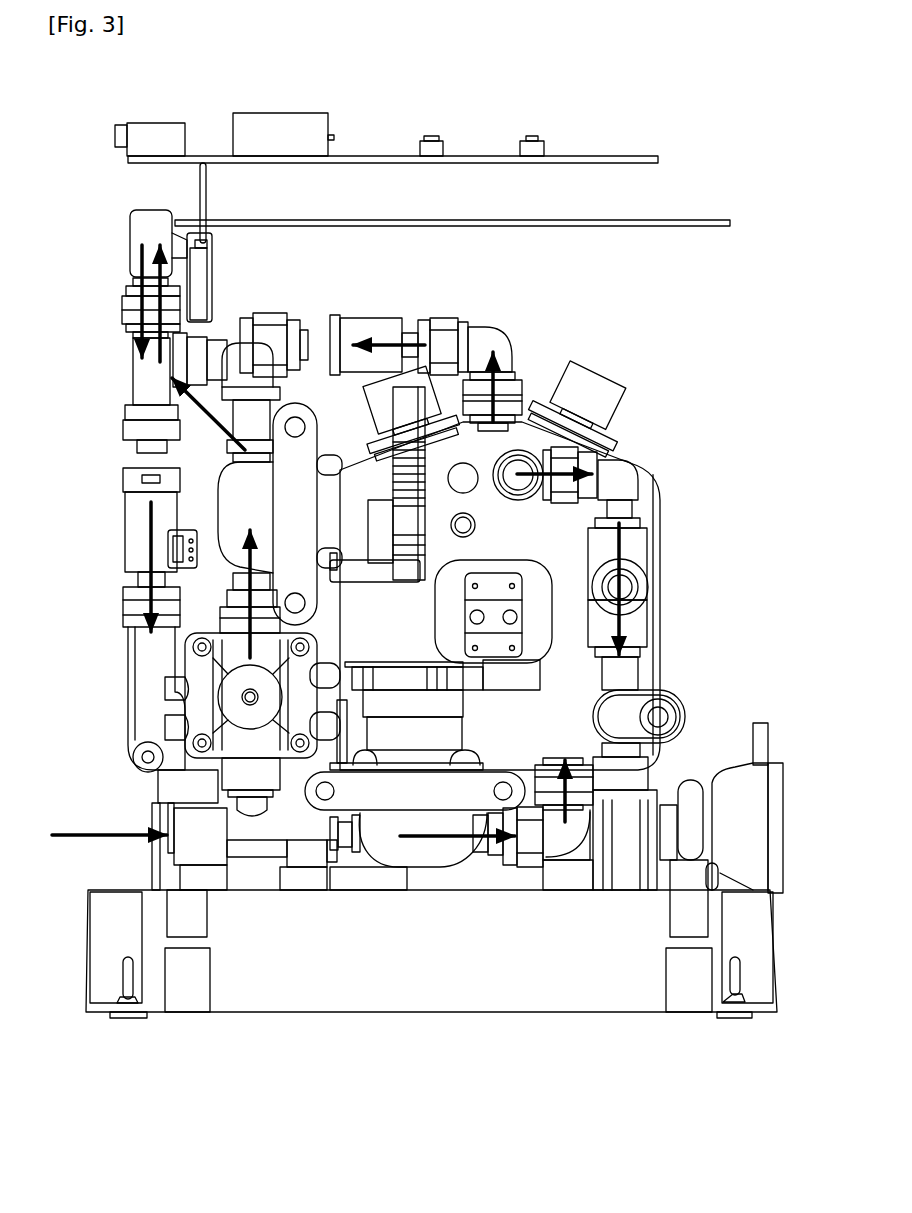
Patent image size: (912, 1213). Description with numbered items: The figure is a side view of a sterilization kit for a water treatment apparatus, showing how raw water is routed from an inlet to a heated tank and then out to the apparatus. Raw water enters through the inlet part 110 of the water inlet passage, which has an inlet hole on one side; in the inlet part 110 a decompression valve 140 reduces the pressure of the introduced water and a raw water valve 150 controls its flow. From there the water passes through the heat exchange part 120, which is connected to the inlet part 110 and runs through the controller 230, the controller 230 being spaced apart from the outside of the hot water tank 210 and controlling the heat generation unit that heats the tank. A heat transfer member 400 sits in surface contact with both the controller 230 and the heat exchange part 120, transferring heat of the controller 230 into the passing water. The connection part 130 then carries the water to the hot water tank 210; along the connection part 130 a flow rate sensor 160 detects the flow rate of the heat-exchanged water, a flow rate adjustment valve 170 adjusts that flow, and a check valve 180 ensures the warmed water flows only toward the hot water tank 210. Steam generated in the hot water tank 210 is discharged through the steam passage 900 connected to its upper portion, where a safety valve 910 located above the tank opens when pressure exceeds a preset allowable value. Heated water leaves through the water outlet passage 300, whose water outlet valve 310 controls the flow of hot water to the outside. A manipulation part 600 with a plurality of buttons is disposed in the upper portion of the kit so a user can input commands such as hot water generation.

The manipulation part 600 is at (278, 113).
The heat transfer member 400 is at (138, 232).
The heat exchange part 120 is at (145, 279).
The controller 230 is at (205, 276).
The check valve 180 is at (147, 392).
The raw water valve 150 is at (237, 491).
The flow rate sensor 160 is at (138, 518).
The flow rate adjustment valve 170 is at (147, 663).
The decompression valve 140 is at (230, 700).
The inlet part 110 is at (240, 777).
The safety valve 910 is at (378, 326).
The steam passage 900 is at (493, 327).
The water outlet passage 300 is at (625, 505).
The hot water tank 210 is at (568, 588).
The water outlet valve 310 is at (635, 628).
The connection part 130 is at (556, 832).